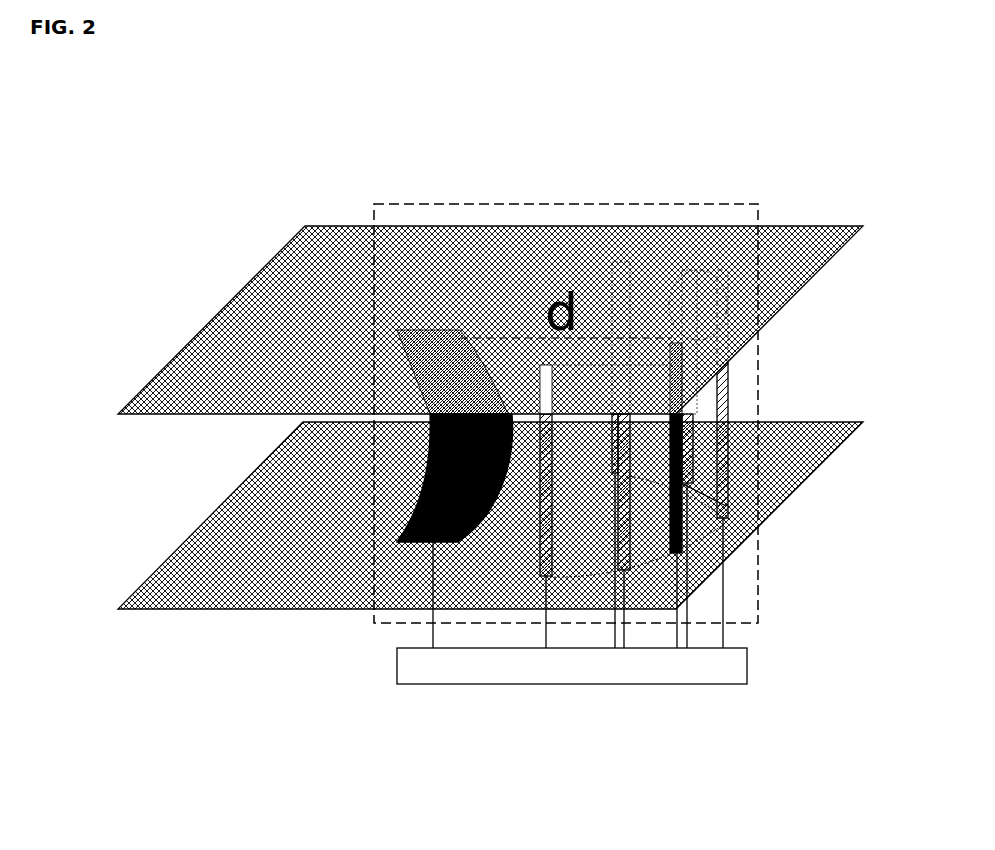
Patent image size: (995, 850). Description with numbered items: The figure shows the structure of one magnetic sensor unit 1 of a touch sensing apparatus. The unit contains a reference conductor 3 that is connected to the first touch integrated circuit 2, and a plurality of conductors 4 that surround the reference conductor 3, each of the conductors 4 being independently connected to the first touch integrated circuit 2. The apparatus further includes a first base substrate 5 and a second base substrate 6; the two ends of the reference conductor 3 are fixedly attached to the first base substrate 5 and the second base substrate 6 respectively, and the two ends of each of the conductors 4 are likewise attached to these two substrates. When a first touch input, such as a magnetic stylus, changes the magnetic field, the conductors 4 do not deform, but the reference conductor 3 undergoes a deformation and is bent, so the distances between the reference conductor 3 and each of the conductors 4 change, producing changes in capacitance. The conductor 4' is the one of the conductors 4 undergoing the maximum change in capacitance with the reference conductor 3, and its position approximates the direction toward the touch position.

The magnetic sensor unit 1 is at (567, 203).
The first touch integrated circuit 2 is at (573, 664).
The reference conductor 3 is at (430, 451).
The conductors 4 is at (707, 482).
The conductor 4' is at (754, 495).
The first base substrate 5 is at (235, 544).
The second base substrate 6 is at (293, 277).